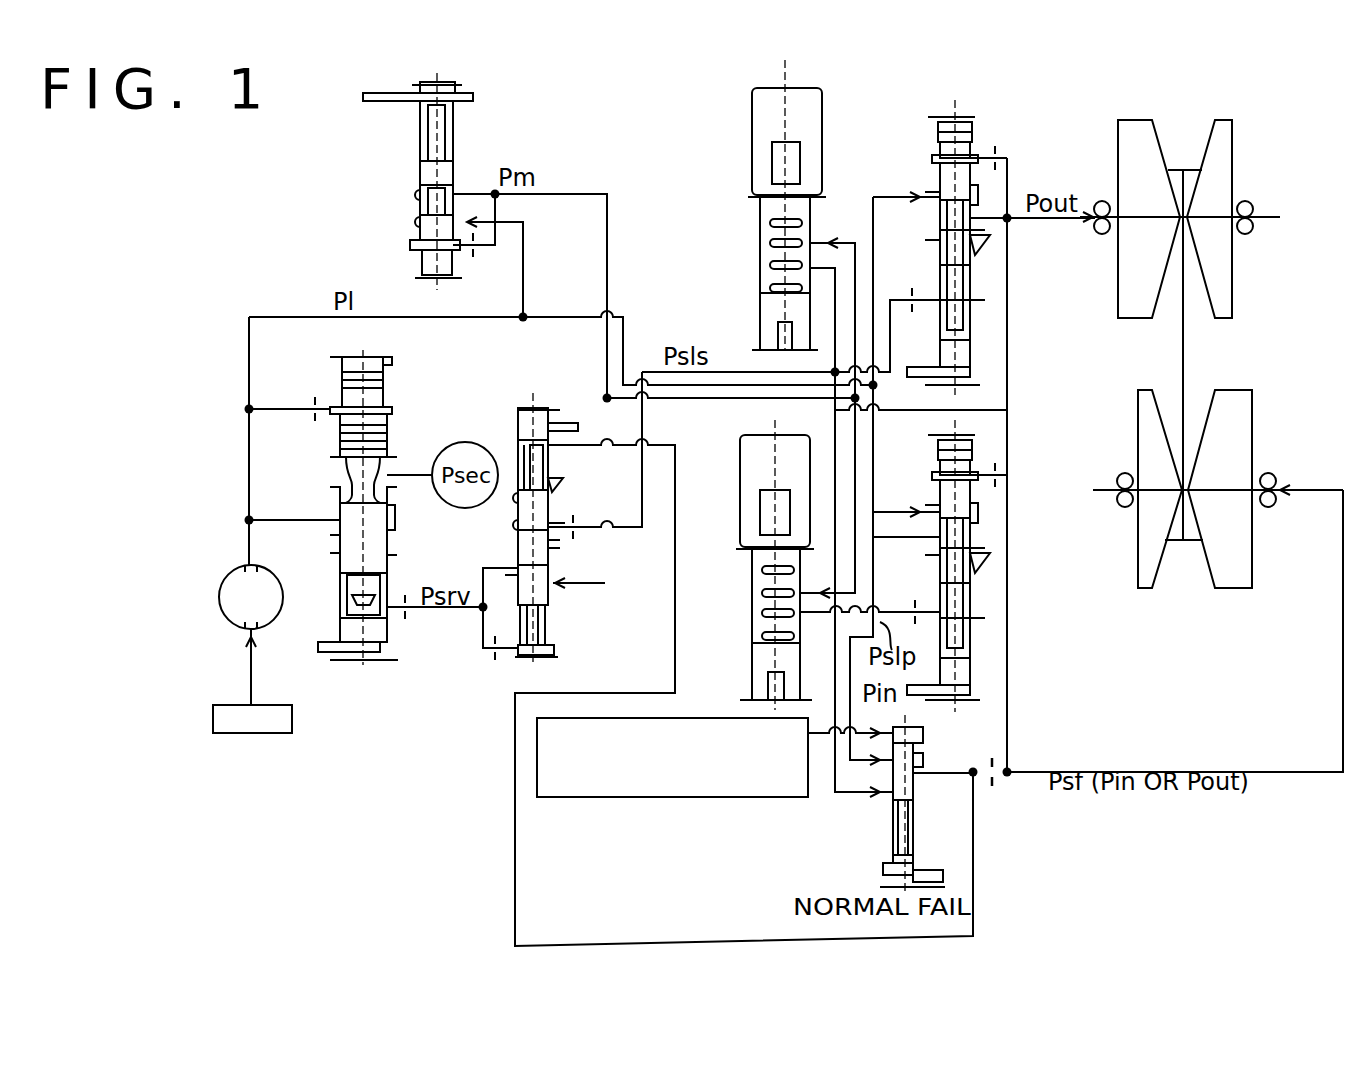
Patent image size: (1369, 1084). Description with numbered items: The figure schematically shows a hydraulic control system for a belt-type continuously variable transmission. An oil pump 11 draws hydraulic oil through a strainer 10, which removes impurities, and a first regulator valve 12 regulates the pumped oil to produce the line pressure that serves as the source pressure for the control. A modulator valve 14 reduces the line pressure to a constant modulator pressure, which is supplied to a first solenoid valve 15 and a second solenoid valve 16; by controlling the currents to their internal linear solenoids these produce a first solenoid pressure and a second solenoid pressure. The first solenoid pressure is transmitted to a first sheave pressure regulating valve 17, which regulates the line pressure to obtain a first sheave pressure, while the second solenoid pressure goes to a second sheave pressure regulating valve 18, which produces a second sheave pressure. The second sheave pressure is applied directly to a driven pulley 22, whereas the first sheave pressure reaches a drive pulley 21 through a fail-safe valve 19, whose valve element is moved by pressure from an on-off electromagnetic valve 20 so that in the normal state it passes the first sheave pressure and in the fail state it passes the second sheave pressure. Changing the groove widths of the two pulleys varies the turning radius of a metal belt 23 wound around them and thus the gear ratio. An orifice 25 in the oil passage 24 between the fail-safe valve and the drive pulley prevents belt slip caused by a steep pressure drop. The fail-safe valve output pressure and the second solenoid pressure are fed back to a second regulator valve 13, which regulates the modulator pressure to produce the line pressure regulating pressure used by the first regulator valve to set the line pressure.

The strainer 10 is at (213, 718).
The oil pump 11 is at (219, 597).
The first regulator valve 12 is at (395, 528).
The second regulator valve 13 is at (548, 602).
The modulator valve 14 is at (455, 138).
The first solenoid valve 15 is at (740, 455).
The second solenoid valve 16 is at (752, 125).
The first sheave pressure regulating valve 17 is at (940, 470).
The second sheave pressure regulating valve 18 is at (940, 152).
The fail-safe valve 19 is at (893, 832).
The on-off electromagnetic valve 20 is at (620, 798).
The drive pulley 21 is at (1232, 590).
The driven pulley 22 is at (1135, 320).
The metal belt 23 is at (1185, 345).
The oil passage 24 is at (945, 770).
The orifice 25 is at (992, 790).